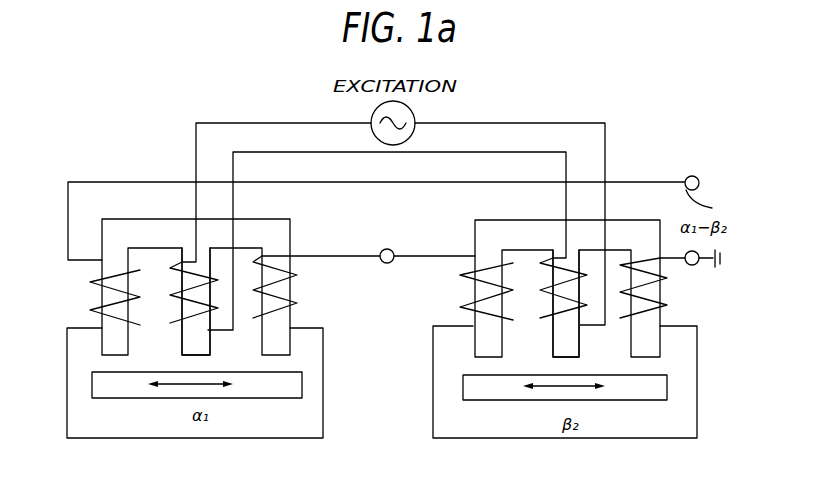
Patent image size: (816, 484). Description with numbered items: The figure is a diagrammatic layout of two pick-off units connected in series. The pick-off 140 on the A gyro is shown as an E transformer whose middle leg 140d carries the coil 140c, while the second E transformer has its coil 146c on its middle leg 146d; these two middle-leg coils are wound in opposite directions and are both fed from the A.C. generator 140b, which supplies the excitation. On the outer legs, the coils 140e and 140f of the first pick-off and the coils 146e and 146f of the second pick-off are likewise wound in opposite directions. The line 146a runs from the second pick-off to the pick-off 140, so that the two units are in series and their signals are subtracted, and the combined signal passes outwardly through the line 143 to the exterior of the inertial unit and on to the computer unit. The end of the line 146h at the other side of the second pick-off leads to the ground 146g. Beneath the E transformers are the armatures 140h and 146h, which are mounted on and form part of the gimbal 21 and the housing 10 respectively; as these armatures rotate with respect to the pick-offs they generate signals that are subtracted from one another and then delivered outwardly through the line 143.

The pick-off 140 is at (112, 219).
The A.C. generator 140b is at (409, 108).
The coil 140c is at (170, 322).
The middle leg 140d is at (203, 330).
The coil 140e is at (96, 285).
The coil 140f is at (297, 276).
The armature 140h is at (253, 399).
The line 143 is at (613, 182).
The line 146a is at (409, 240).
The coil 146c is at (540, 318).
The middle leg 146d is at (575, 346).
The coil 146e is at (466, 280).
The coil 146f is at (661, 303).
The ground 146g is at (723, 258).
The armature 146h is at (482, 400).
The gimbal 21 is at (105, 399).
The housing 10 is at (463, 400).